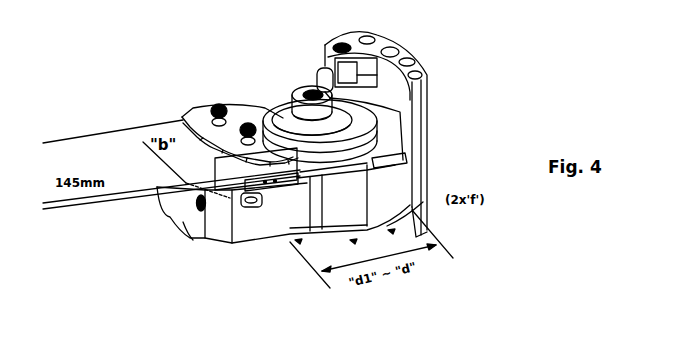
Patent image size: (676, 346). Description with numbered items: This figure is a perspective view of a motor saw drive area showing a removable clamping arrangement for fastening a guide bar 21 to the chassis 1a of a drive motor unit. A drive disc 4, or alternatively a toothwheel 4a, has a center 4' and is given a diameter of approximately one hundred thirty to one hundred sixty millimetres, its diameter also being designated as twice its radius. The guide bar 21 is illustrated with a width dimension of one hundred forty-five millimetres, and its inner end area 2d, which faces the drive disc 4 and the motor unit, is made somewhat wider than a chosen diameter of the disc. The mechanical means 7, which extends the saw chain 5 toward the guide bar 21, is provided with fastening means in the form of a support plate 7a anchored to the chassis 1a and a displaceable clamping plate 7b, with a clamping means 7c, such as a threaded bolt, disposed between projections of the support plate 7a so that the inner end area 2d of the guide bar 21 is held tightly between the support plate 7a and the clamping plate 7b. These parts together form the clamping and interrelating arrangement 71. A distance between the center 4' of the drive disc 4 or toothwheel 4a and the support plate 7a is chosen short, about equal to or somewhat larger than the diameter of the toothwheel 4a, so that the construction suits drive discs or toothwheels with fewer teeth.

The clamping and together-linking arrangement 71 is at (170, 112).
The displaceable clamping plate 7b is at (188, 110).
The clamping means 7c is at (216, 103).
The mechanical means 7 is at (246, 100).
The drive disc 4 is at (345, 119).
The center of the drive disc 4' is at (313, 61).
The toothwheel 4a is at (410, 160).
The inner guide bar end area 2d is at (186, 183).
The guide bar 21 is at (128, 202).
The support plate 7a is at (198, 207).
The chassis 1a is at (250, 291).
The saw chain 5 is at (113, 176).